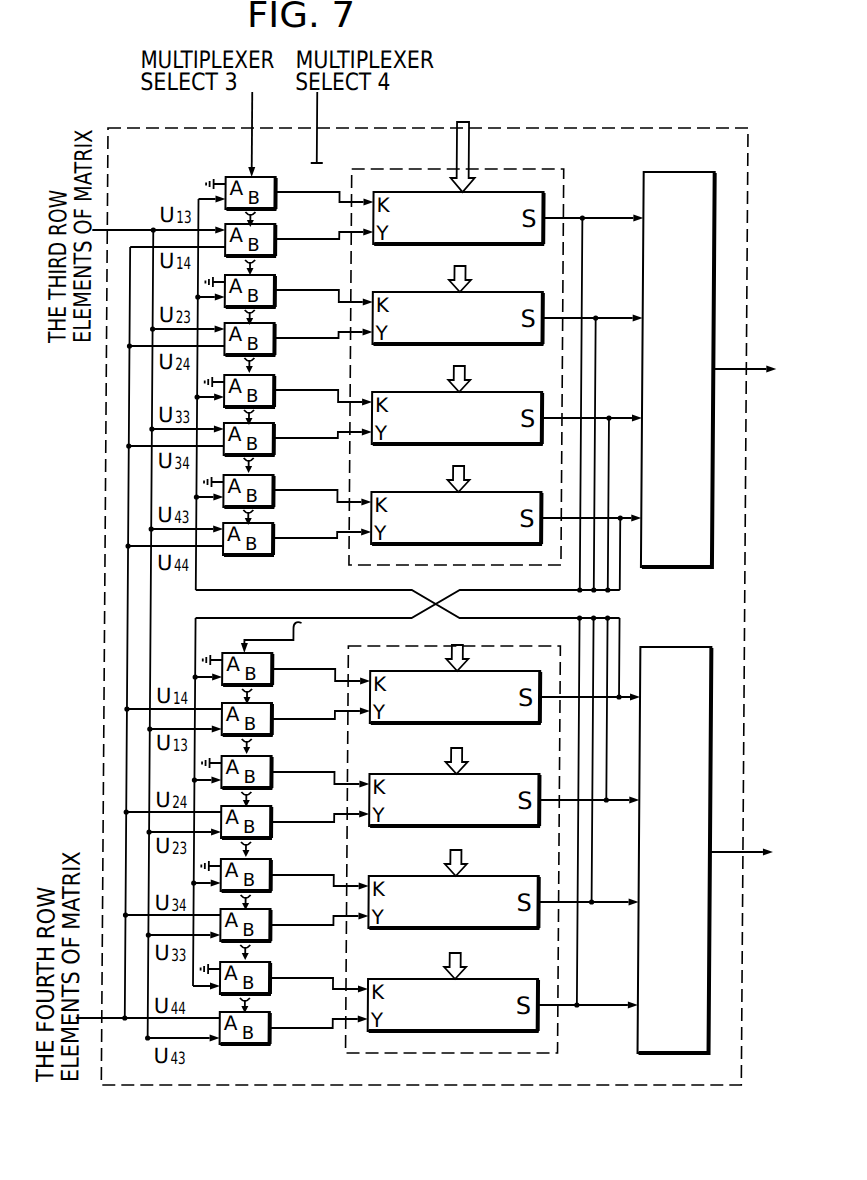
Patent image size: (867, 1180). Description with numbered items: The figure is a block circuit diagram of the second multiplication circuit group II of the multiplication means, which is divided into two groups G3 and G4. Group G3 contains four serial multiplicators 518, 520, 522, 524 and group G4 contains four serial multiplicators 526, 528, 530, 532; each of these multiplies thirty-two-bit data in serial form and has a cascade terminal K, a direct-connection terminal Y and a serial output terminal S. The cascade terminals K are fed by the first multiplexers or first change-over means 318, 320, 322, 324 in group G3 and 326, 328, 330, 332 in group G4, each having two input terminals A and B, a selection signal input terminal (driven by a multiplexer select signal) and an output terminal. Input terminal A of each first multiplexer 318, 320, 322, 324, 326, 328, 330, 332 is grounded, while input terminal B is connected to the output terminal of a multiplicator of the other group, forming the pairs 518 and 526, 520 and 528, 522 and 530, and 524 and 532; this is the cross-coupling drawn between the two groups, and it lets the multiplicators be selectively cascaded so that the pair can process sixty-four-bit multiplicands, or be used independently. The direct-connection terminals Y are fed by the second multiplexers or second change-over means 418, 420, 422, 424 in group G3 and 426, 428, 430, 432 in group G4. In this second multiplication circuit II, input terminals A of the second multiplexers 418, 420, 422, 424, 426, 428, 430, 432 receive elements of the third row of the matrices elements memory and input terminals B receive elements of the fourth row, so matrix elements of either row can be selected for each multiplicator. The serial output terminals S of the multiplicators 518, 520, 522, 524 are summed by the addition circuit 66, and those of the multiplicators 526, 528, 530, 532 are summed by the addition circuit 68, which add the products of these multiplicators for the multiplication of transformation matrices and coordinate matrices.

The first multiplexer 318 is at (271, 177).
The second multiplexer 418 is at (277, 232).
The first multiplexer 320 is at (276, 280).
The second multiplexer 420 is at (277, 330).
The first multiplexer 322 is at (276, 380).
The second multiplexer 422 is at (277, 430).
The first multiplexer 324 is at (276, 480).
The second multiplexer 424 is at (277, 527).
The first multiplexer 326 is at (277, 661).
The second multiplexer 426 is at (277, 709).
The first multiplexer 328 is at (277, 760).
The second multiplexer 428 is at (277, 812).
The first multiplexer 330 is at (277, 864).
The second multiplexer 430 is at (277, 917).
The first multiplexer 332 is at (277, 968).
The second multiplexer 432 is at (277, 1018).
The serial multiplicator 518 is at (500, 193).
The serial multiplicator 520 is at (503, 293).
The serial multiplicator 522 is at (494, 393).
The serial multiplicator 524 is at (494, 492).
The serial multiplicator 526 is at (490, 671).
The serial multiplicator 528 is at (492, 774).
The serial multiplicator 530 is at (492, 876).
The serial multiplicator 532 is at (488, 979).
The addition circuit 66 is at (722, 186).
The addition circuit 68 is at (692, 647).
The group G3 is at (566, 169).
The group G4 is at (482, 856).
The multiplication circuit group II is at (697, 129).